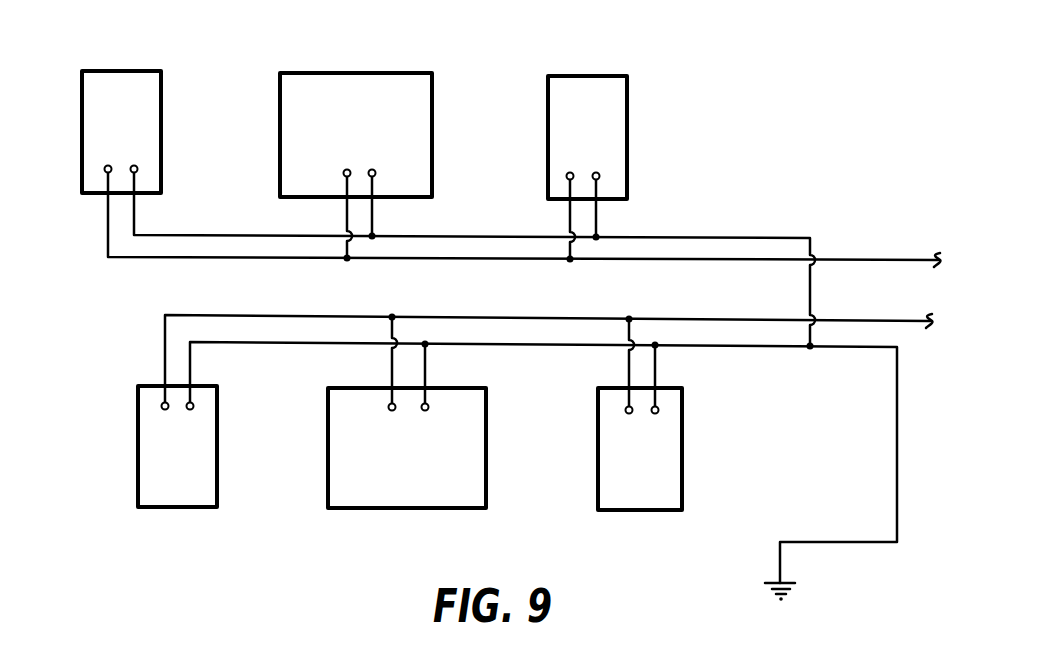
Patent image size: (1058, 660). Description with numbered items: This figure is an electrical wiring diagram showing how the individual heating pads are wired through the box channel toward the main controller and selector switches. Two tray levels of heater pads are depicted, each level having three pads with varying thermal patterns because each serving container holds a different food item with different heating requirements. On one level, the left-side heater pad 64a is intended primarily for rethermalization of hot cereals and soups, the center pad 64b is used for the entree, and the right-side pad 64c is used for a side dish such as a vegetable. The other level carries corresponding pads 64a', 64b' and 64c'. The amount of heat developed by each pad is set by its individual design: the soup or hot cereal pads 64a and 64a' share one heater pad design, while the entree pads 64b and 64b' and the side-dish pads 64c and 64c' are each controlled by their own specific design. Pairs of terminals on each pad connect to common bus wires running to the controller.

The soup or hot cereal heater pad 64a' is at (163, 132).
The entree heater pad 64b' is at (398, 135).
The side-dish heater pad 64c' is at (634, 137).
The heater pad 64a is at (219, 446).
The center heater pad 64b is at (444, 448).
The right side heater pad 64c is at (687, 449).